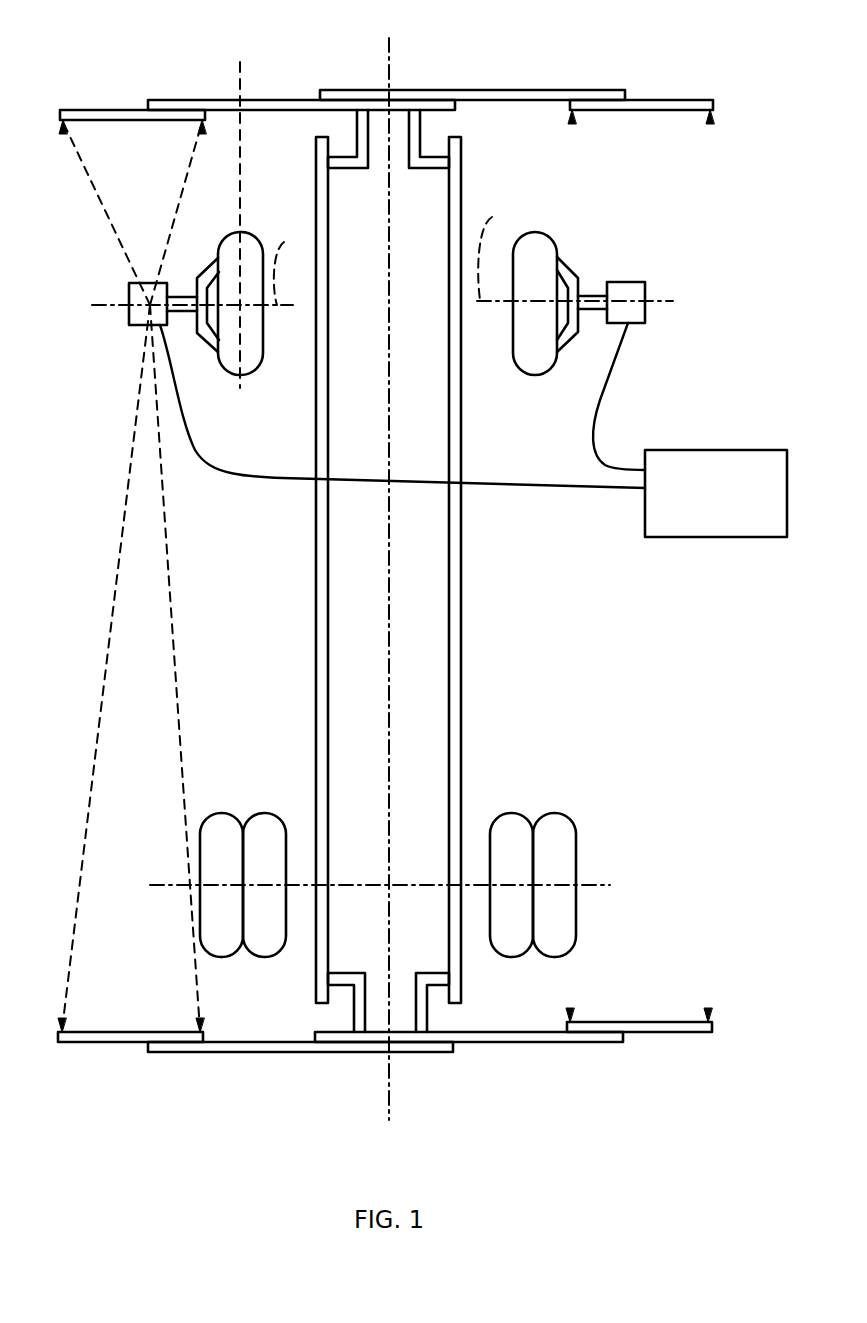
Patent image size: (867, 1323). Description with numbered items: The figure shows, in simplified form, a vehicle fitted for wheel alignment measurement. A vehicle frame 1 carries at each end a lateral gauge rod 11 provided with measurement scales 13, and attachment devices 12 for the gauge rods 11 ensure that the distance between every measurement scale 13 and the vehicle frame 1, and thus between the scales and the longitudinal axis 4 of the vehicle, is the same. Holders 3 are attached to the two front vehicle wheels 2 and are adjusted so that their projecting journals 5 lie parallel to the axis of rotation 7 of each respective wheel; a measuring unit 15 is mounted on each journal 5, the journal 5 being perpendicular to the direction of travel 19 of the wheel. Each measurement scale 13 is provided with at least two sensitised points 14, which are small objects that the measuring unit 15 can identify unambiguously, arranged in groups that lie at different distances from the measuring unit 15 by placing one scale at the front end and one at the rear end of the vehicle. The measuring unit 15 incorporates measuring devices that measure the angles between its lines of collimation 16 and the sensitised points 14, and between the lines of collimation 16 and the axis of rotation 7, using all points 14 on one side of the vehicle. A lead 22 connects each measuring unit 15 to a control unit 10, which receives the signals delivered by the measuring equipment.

The vehicle frame 1 is at (320, 540).
The vehicle wheel 2 is at (250, 372).
The holder 3 is at (215, 350).
The longitudinal axis 4 is at (390, 603).
The journal 5 is at (182, 297).
The axis of rotation 7 is at (390, 257).
The control unit 10 is at (757, 538).
The gauge rod 11 is at (316, 97).
The attachment device 12 is at (332, 168).
The measurement scale 13 is at (100, 108).
The sensitised point 14 is at (202, 130).
The measuring unit 15 is at (128, 318).
The line of collimation 16 is at (180, 205).
The direction of travel 19 is at (240, 62).
The lead 22 is at (600, 400).